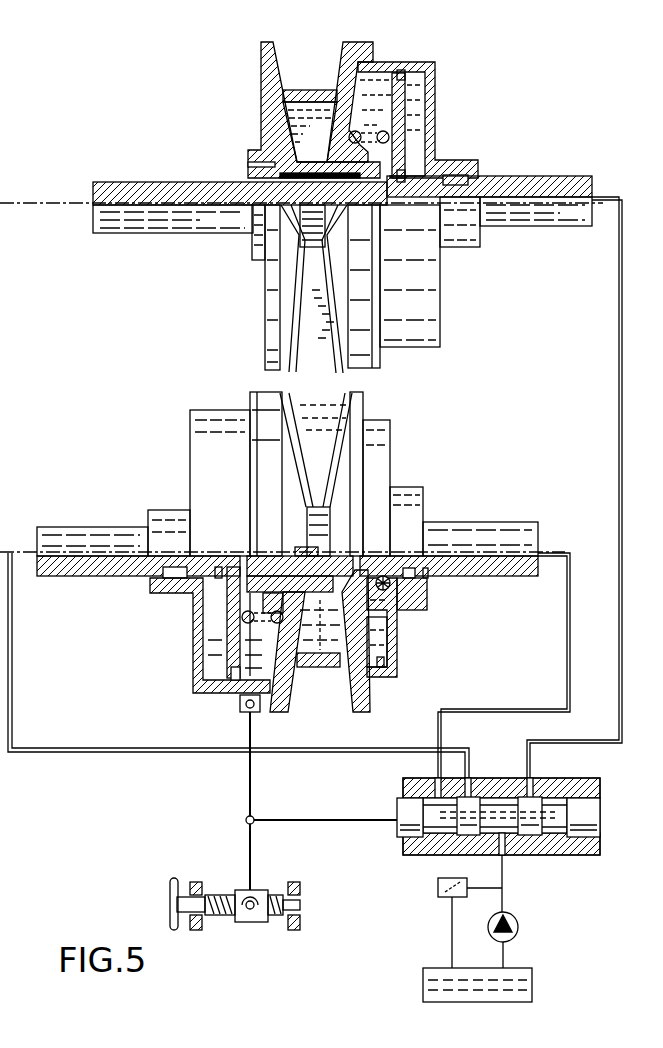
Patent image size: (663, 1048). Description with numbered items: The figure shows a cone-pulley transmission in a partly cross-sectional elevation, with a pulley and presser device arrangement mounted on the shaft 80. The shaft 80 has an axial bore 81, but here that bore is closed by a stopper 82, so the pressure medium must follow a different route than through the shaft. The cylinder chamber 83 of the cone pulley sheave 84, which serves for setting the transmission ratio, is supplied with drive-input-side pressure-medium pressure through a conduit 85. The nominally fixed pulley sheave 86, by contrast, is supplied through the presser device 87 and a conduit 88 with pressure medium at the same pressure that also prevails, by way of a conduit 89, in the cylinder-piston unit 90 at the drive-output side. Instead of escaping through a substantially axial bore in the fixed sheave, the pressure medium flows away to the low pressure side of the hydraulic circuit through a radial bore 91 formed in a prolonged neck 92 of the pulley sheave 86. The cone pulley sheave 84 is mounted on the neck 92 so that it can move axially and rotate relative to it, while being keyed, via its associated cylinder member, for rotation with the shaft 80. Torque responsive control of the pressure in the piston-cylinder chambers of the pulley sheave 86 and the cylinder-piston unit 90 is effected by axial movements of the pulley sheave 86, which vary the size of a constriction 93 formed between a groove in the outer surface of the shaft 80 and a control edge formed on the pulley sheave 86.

The shaft 80 is at (125, 537).
The axial bore 81 is at (220, 553).
The stopper 82 is at (303, 552).
The cylinder chamber 83 is at (245, 596).
The cone pulley sheave 84 is at (265, 405).
The conduit 85 is at (12, 609).
The nominally fixed pulley sheave 86 is at (358, 403).
The presser device 87 is at (424, 596).
The conduit 88 is at (558, 548).
The conduit 89 is at (619, 340).
The cylinder-piston unit 90 is at (435, 107).
The radial bore 91 is at (320, 641).
The prolonged neck 92 is at (248, 588).
The constriction 93 is at (368, 612).